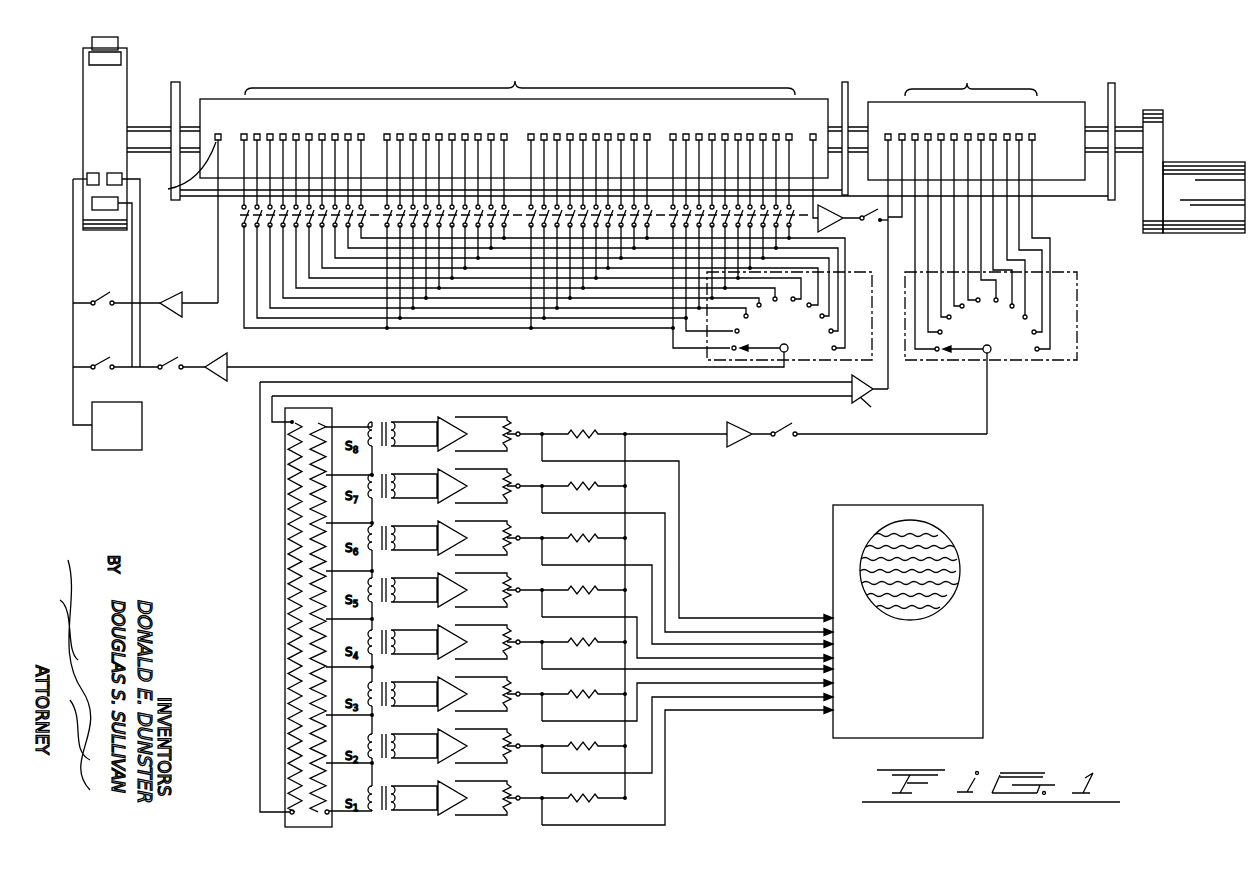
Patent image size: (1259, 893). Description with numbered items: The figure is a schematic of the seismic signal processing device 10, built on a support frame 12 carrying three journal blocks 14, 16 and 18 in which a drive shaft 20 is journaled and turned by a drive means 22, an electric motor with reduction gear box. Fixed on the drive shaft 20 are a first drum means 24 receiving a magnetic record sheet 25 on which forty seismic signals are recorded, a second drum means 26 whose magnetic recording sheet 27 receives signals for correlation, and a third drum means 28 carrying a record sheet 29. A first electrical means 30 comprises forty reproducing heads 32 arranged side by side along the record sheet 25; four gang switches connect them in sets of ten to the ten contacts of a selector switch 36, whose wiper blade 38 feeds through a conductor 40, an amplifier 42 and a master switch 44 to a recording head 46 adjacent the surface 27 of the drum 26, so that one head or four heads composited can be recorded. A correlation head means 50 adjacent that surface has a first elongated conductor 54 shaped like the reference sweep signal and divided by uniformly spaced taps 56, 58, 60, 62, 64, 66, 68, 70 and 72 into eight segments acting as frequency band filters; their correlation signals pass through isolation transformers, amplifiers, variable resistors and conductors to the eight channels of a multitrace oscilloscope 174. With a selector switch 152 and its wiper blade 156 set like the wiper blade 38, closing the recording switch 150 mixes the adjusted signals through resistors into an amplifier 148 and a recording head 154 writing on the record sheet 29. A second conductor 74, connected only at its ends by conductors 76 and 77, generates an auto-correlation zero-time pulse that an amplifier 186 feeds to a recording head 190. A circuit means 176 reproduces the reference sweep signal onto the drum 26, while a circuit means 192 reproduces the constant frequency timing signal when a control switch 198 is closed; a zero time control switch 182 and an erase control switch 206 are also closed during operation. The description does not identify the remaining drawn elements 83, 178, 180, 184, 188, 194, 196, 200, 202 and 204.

The device 10 is at (201, 464).
The support frame 12 is at (204, 197).
The journal block 14 is at (1116, 91).
The journal block 16 is at (849, 82).
The journal block 18 is at (180, 83).
The drive shaft 20 is at (165, 126).
The drive means 22 is at (1216, 208).
The first cylindrical drum means 24 is at (222, 91).
The magnetic record sheet 25 is at (813, 97).
The second cylindrical drum means 26 is at (83, 106).
The magnetic recording sheet 27 is at (93, 89).
The third drum means 28 is at (1061, 101).
The magnetic recording sheet 29 is at (885, 103).
The first electrical means 30 is at (262, 384).
The reproducing heads 32 is at (520, 81).
The selector switch 36 is at (707, 350).
The wiper blade 38 is at (781, 345).
The conductor 40 is at (507, 367).
The amplifier 42 is at (228, 362).
The master switch 44 is at (166, 364).
The recording head 46 is at (124, 176).
The correlation head means 50 is at (90, 38).
The first elongated conductor 54 is at (326, 420).
The electrical tap 56 is at (350, 819).
The electrical tap 58 is at (349, 768).
The electrical tap 60 is at (349, 721).
The electrical tap 62 is at (349, 671).
The electrical tap 64 is at (349, 622).
The electrical tap 66 is at (349, 573).
The electrical tap 68 is at (349, 524).
The electrical tap 70 is at (349, 477).
The electrical tap 72 is at (349, 429).
The second conductor 74 is at (290, 620).
The conductor 76 is at (260, 746).
The conductor 77 is at (374, 418).
The oscilloscope input lines 83 is at (691, 520).
The amplifier 148 is at (738, 447).
The recording switch 150 is at (789, 445).
The selector switch 152 is at (1004, 361).
The recording head 154 is at (971, 81).
The wiper blade 156 is at (961, 353).
The multitrace oscilloscope 174 is at (984, 620).
The circuit means 176 is at (206, 296).
The lead 178 is at (181, 169).
The amplifier 180 is at (172, 313).
The zero time control switch 182 is at (112, 298).
The contact 184 is at (88, 174).
The amplifier 186 is at (870, 401).
The line 188 is at (888, 266).
The recording head 190 is at (888, 132).
The circuit means 192 is at (856, 224).
The timing lead 194 is at (828, 98).
The amplifier 196 is at (831, 212).
The control switch 198 is at (881, 224).
The timing contact 200 is at (902, 132).
The contact 202 is at (108, 212).
The power source 204 is at (128, 402).
The erase control switch 206 is at (100, 350).